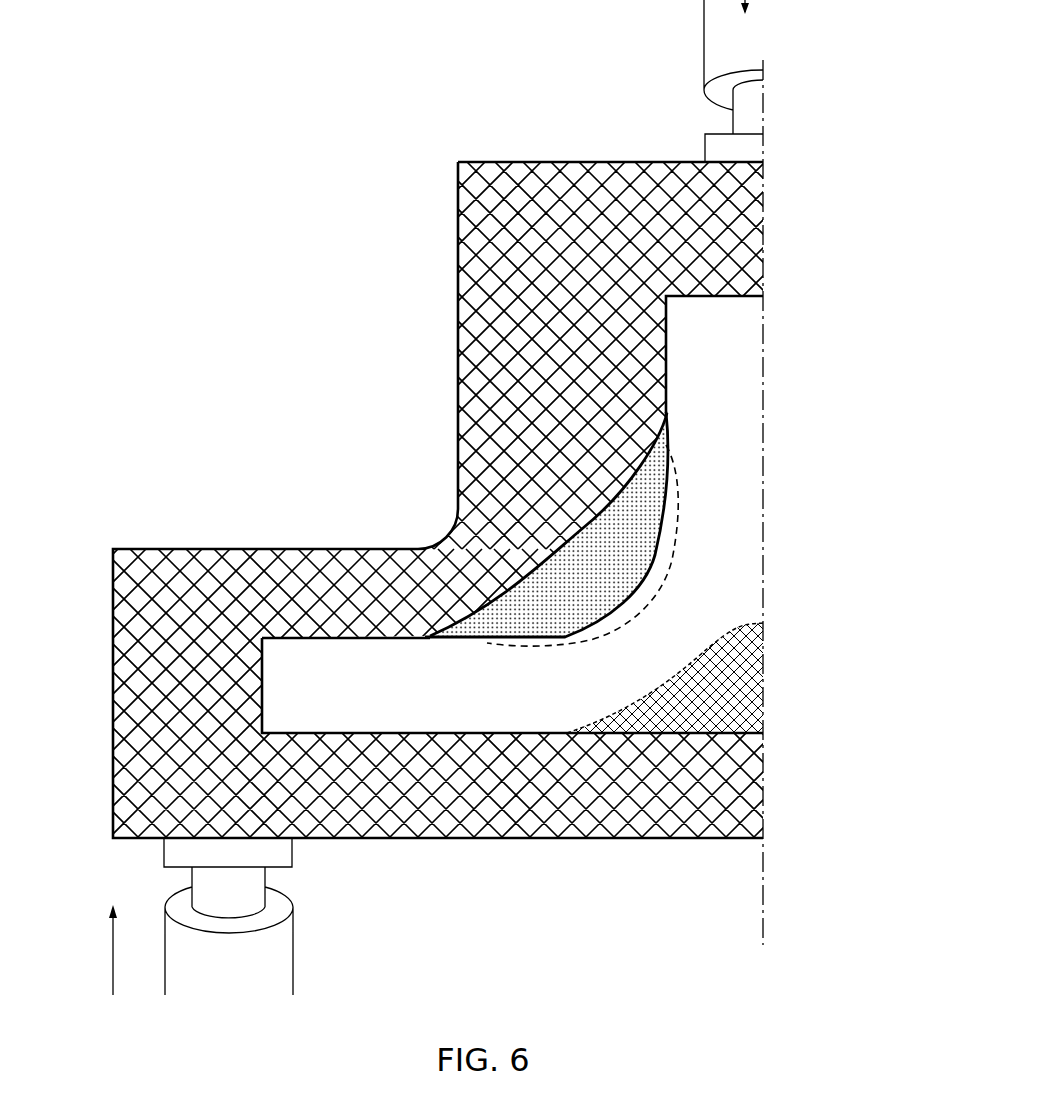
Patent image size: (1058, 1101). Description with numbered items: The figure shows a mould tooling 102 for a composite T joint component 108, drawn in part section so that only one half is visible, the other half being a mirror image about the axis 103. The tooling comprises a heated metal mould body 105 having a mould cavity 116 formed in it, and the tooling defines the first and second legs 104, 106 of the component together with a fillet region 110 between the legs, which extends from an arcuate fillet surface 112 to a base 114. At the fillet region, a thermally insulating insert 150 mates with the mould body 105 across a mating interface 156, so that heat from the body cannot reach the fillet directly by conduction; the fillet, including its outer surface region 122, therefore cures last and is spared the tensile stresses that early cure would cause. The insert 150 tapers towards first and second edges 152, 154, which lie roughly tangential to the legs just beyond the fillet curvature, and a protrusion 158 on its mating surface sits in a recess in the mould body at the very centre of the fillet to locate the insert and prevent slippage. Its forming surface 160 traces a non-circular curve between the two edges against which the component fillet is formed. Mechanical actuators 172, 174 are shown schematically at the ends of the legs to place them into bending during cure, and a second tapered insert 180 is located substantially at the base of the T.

The mould tooling 102 is at (455, 117).
The axis 103 is at (763, 522).
The first leg 104 is at (728, 408).
The mould body 105 is at (610, 212).
The second leg 106 is at (388, 710).
The composite T joint component 108 is at (740, 513).
The fillet region 110 is at (690, 615).
The arcuate fillet surface 112 is at (664, 554).
The base of the fillet region 114 is at (677, 657).
The mould cavity 116 is at (737, 314).
The outer region of the fillet 122 is at (601, 637).
The insert 150 is at (591, 597).
The first edge 152 is at (666, 404).
The second edge 154 is at (430, 636).
The mating interface 156 is at (635, 464).
The protrusion 158 is at (583, 528).
The forming surface 160 is at (510, 612).
The mechanical actuator 172 is at (201, 916).
The mechanical actuator 174 is at (745, 81).
The second insert 180 is at (737, 696).